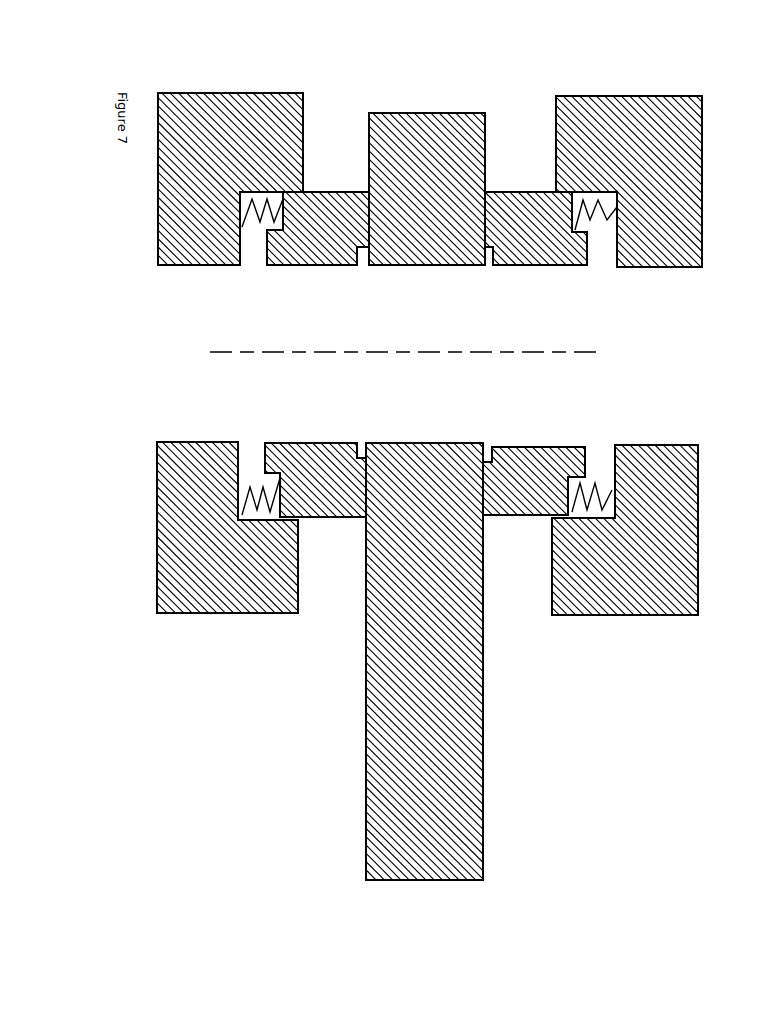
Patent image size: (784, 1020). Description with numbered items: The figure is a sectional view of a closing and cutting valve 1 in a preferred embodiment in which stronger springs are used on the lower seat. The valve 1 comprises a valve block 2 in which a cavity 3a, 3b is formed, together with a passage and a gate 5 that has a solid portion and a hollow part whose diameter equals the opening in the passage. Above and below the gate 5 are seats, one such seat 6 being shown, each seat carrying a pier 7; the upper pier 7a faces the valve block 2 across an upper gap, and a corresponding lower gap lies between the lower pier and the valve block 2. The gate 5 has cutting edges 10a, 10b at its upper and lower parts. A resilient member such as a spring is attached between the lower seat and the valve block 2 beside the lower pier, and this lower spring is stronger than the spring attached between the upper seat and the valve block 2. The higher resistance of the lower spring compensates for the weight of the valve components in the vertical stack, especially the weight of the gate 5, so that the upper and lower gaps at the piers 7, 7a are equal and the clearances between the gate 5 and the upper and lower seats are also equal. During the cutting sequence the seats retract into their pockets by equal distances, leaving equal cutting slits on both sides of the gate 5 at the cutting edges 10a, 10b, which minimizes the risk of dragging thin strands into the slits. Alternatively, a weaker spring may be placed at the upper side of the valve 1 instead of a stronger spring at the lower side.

The cutting valve 1 is at (65, 705).
The valve block 2 is at (176, 116).
The cavity 3a is at (484, 794).
The cavity 3b is at (274, 250).
The gate 5 is at (410, 128).
The seat 6 is at (512, 210).
The pier 7 is at (328, 205).
The upper pier 7a is at (617, 220).
The upper cutting edge 10a is at (587, 240).
The lower cutting edge 10b is at (249, 240).